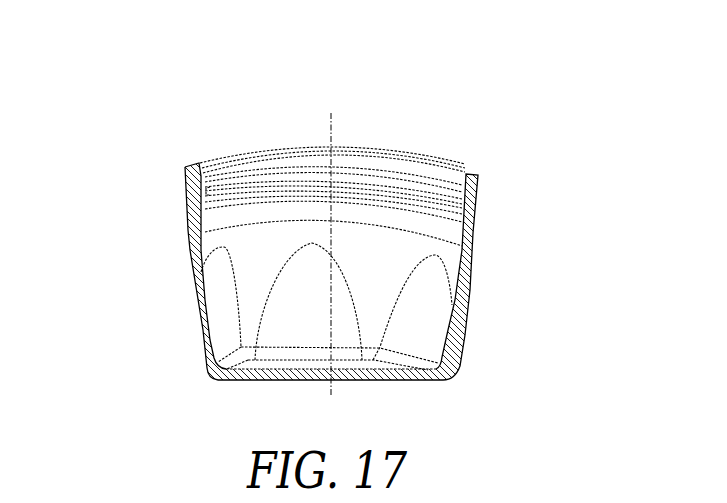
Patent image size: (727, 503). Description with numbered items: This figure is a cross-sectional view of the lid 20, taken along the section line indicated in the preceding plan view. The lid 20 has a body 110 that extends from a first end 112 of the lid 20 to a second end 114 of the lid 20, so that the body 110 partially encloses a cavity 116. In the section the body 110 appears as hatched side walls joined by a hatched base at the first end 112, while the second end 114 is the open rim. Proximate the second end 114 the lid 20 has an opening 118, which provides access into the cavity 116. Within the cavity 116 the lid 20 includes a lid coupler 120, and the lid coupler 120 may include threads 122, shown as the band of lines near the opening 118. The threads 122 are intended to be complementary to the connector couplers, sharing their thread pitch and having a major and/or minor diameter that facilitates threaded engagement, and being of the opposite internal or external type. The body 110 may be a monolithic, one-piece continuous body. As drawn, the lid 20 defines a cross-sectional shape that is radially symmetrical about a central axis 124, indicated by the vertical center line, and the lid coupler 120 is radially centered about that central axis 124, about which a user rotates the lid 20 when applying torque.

The lid 20 is at (130, 225).
The body 110 is at (473, 233).
The first end 112 is at (210, 378).
The second end 114 is at (193, 163).
The cavity 116 is at (394, 256).
The opening 118 is at (228, 157).
The lid coupler 120 is at (392, 183).
The threads 122 is at (295, 174).
The central axis 124 is at (332, 129).